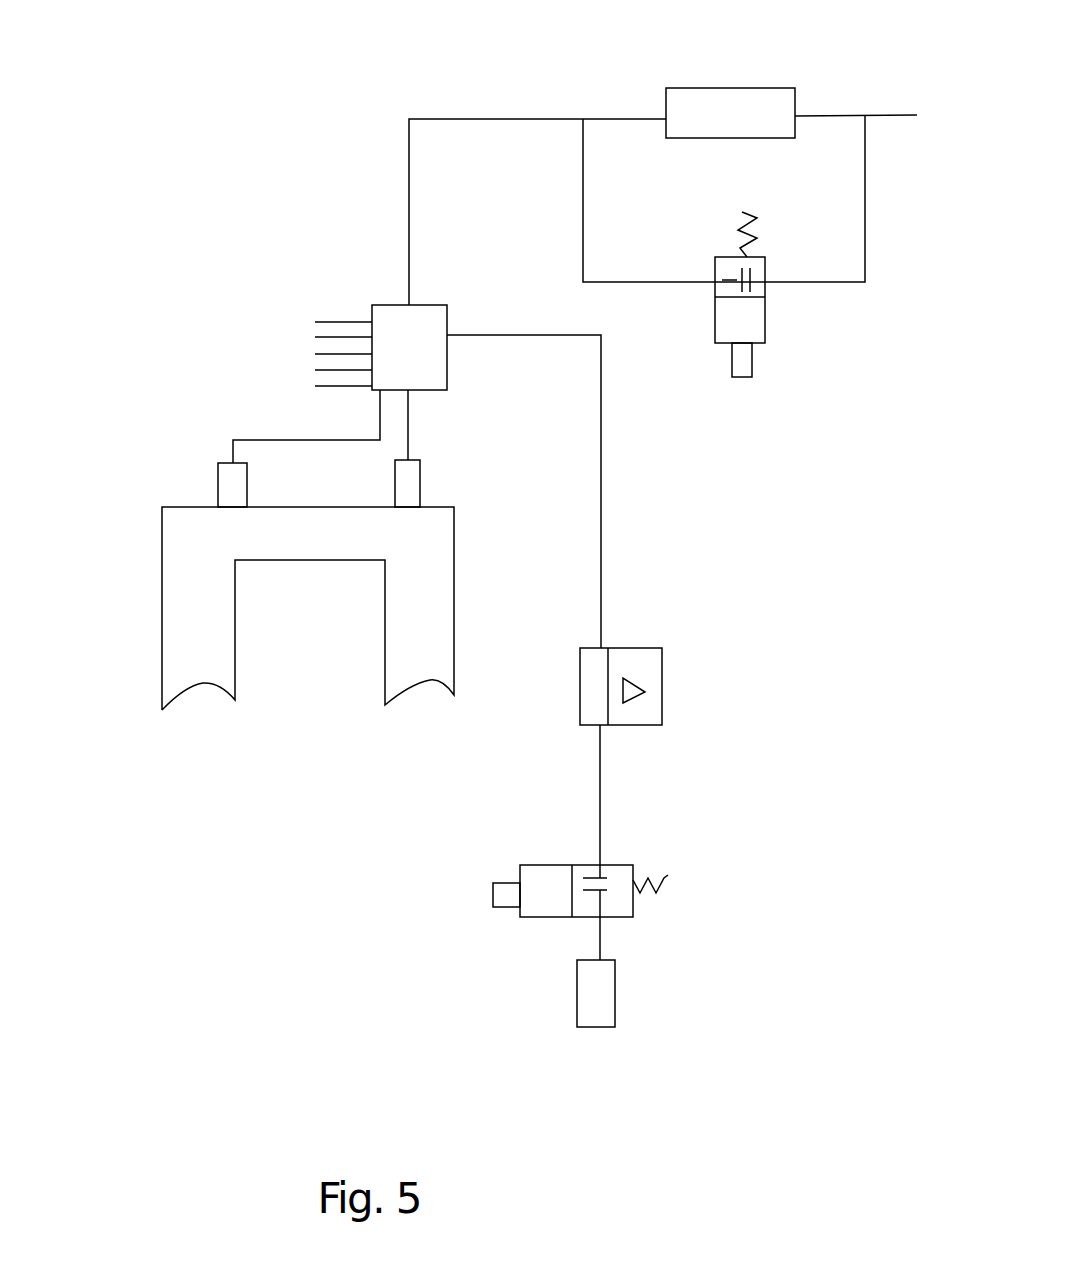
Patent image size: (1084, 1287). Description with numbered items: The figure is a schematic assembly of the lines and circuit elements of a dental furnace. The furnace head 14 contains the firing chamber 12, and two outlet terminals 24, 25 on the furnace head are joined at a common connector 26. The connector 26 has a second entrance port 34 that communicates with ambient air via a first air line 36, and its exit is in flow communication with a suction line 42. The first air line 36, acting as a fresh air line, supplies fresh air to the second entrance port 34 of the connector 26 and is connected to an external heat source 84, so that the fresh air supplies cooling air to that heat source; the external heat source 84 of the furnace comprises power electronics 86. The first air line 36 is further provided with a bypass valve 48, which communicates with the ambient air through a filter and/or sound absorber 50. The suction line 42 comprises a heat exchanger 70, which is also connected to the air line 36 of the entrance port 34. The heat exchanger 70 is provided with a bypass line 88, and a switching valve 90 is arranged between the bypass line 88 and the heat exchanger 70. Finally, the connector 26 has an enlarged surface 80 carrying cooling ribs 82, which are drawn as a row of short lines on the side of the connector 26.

The firing chamber 12 is at (293, 637).
The furnace head 14 is at (241, 608).
The outlet terminal 24 is at (413, 483).
The outlet terminal 25 is at (232, 485).
The connector 26 is at (416, 367).
The second entrance port 34 is at (445, 335).
The first air line 36 is at (602, 543).
The suction line 42 is at (888, 115).
The bypass valve 48 is at (613, 875).
The filter and/or sound absorber 50 is at (597, 995).
The heat exchanger 70 is at (748, 95).
The enlarged surface 80 is at (421, 254).
The cooling ribs 82 is at (305, 352).
The external heat source 84 is at (555, 795).
The power electronics 86 is at (650, 667).
The bypass line 88 is at (827, 282).
The switching valve 90 is at (760, 288).